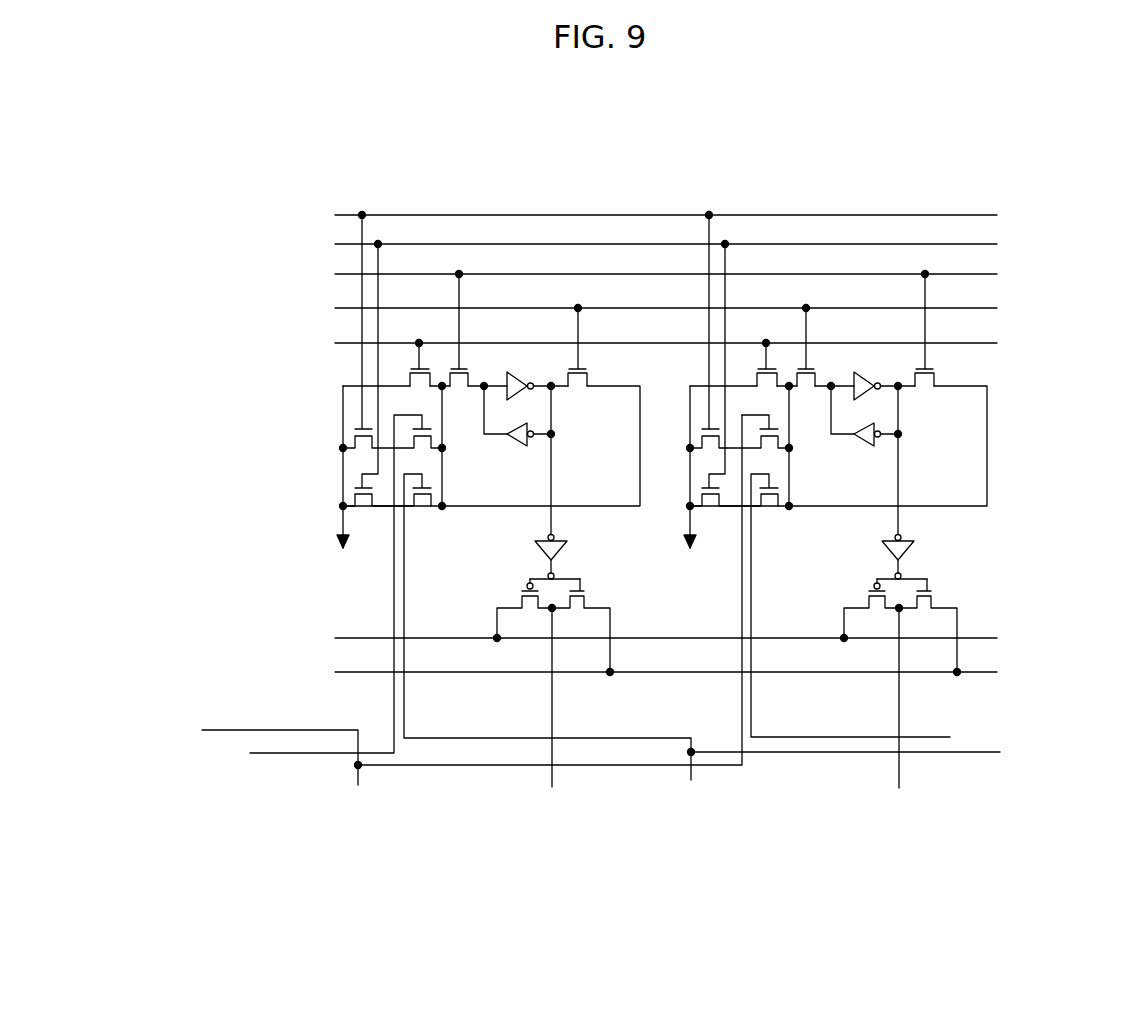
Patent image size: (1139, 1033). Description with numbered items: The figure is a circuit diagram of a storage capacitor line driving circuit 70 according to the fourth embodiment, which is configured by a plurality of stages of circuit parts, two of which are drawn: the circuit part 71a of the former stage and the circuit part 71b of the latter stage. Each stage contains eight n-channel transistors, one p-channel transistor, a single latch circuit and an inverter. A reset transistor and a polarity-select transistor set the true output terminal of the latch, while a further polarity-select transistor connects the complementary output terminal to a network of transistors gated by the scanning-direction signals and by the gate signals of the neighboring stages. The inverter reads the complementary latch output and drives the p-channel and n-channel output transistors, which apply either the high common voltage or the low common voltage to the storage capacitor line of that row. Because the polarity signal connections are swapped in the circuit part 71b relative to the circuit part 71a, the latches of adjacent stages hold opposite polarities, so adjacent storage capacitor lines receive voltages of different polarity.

The storage capacitor line driving circuit 70 is at (966, 181).
The circuit part of the former stage 71a is at (685, 826).
The circuit part of the latter stage 71b is at (1010, 826).